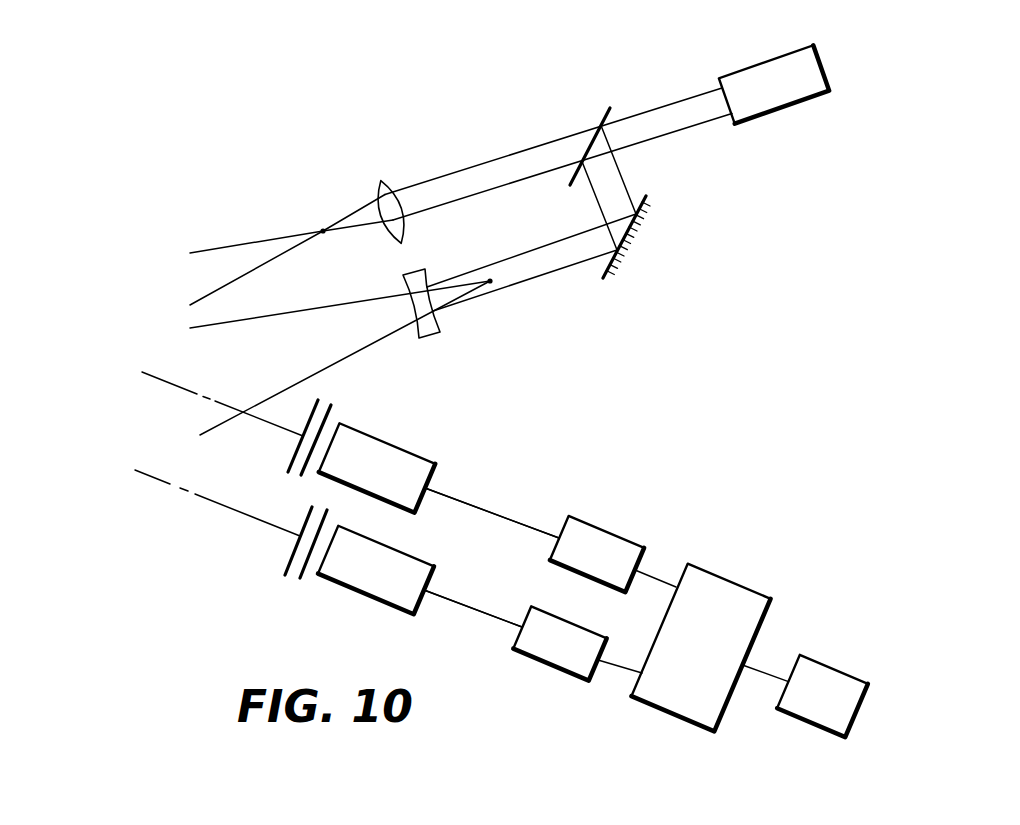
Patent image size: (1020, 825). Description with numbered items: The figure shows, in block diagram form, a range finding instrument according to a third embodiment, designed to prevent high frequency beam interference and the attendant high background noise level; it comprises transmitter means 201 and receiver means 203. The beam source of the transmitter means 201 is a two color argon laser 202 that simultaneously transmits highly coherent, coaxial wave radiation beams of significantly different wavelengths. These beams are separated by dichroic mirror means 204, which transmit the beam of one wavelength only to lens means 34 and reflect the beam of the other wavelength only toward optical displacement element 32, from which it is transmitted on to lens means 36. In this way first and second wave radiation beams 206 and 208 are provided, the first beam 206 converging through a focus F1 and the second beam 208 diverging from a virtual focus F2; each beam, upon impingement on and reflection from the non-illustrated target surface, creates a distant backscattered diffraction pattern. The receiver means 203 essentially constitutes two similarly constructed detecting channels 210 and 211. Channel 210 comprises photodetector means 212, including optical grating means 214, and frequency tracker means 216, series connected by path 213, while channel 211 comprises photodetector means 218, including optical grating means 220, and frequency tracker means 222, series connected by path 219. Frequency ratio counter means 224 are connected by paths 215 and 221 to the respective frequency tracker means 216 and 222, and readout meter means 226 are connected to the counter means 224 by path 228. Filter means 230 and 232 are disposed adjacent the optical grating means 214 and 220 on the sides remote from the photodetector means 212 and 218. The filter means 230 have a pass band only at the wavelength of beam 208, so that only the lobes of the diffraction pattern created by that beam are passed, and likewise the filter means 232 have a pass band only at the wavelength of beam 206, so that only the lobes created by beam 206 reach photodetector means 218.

The transmitter means 201 is at (478, 163).
The argon laser 202 is at (795, 104).
The receiver means 203 is at (602, 518).
The dichroic mirror means 204 is at (608, 108).
The optical displacement element 32 is at (604, 279).
The lens means 34 is at (381, 181).
The lens means 36 is at (430, 335).
The first wave radiation beam 206 is at (226, 247).
The second wave radiation beam 208 is at (228, 323).
The focal point of lens 34 F1 is at (323, 229).
The virtual focal point of lens 36 F2 is at (491, 284).
The optical grating means 220 is at (331, 408).
The filter means 232 is at (293, 457).
The filter means 230 is at (288, 567).
The optical grating means 214 is at (303, 579).
The photodetector means 218 is at (420, 457).
The photodetector means 212 is at (396, 608).
The detecting channel 211 is at (531, 516).
The path 219 is at (538, 530).
The detecting channel 210 is at (495, 611).
The path 213 is at (502, 620).
The frequency tracker means 222 is at (568, 570).
The frequency tracker means 216 is at (539, 661).
The path 221 is at (653, 578).
The path 215 is at (620, 666).
The frequency ratio counter means 224 is at (727, 580).
The path 228 is at (772, 675).
The readout meter means 226 is at (838, 670).